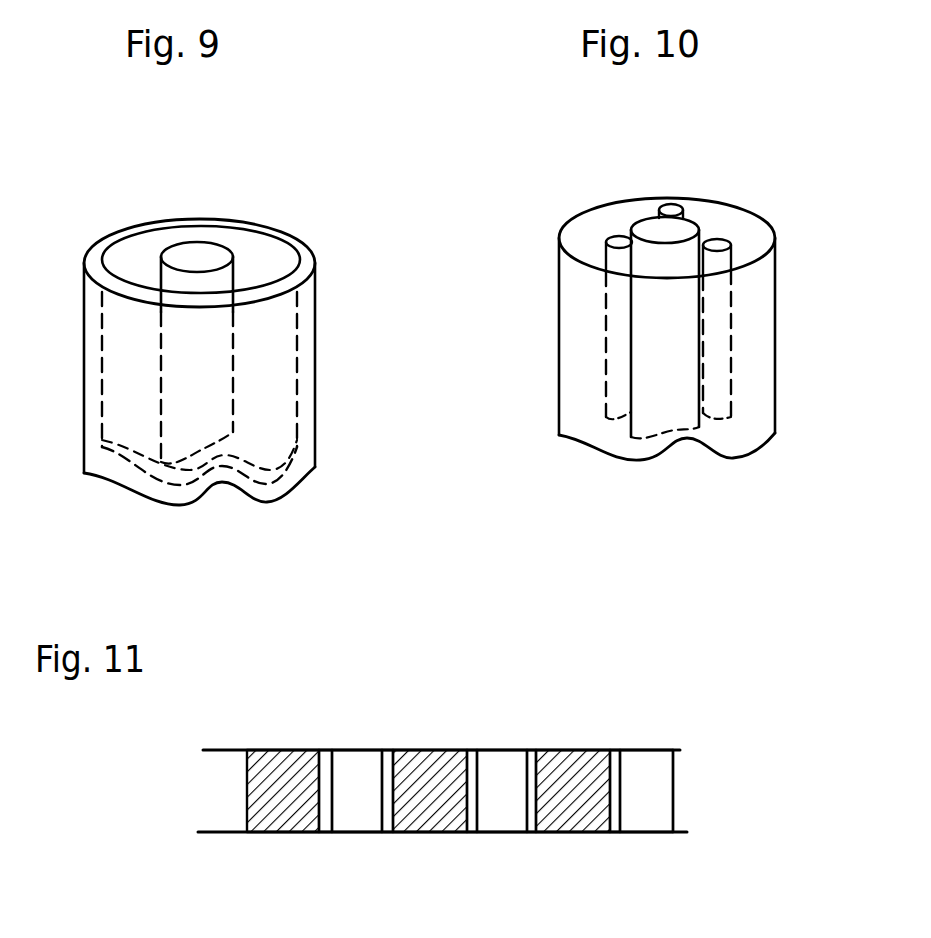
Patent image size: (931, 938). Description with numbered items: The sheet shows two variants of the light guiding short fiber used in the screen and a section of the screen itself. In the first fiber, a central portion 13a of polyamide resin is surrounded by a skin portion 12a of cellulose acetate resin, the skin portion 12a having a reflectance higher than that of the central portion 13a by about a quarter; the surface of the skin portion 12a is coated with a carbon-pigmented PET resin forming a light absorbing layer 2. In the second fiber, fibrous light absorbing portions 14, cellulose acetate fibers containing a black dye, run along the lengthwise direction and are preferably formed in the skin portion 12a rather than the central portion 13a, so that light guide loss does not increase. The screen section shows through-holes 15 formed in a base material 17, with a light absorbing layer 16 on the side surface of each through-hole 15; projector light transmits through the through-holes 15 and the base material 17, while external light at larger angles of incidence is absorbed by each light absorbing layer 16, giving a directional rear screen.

In FIG. 9, the light absorbing layer 2 is at (262, 228).
In FIG. 9, the skin portion 12a is at (280, 255).
In FIG. 10, the skin portion 12a is at (743, 230).
In FIG. 9, the central portion 13a is at (188, 252).
In FIG. 10, the central portion 13a is at (661, 232).
In FIG. 10, the light absorbing portions 14 is at (713, 240).
In FIG. 11, the through-holes 15 is at (353, 758).
In FIG. 11, the light absorbing layer 16 is at (472, 760).
In FIG. 11, the base material 17 is at (430, 832).